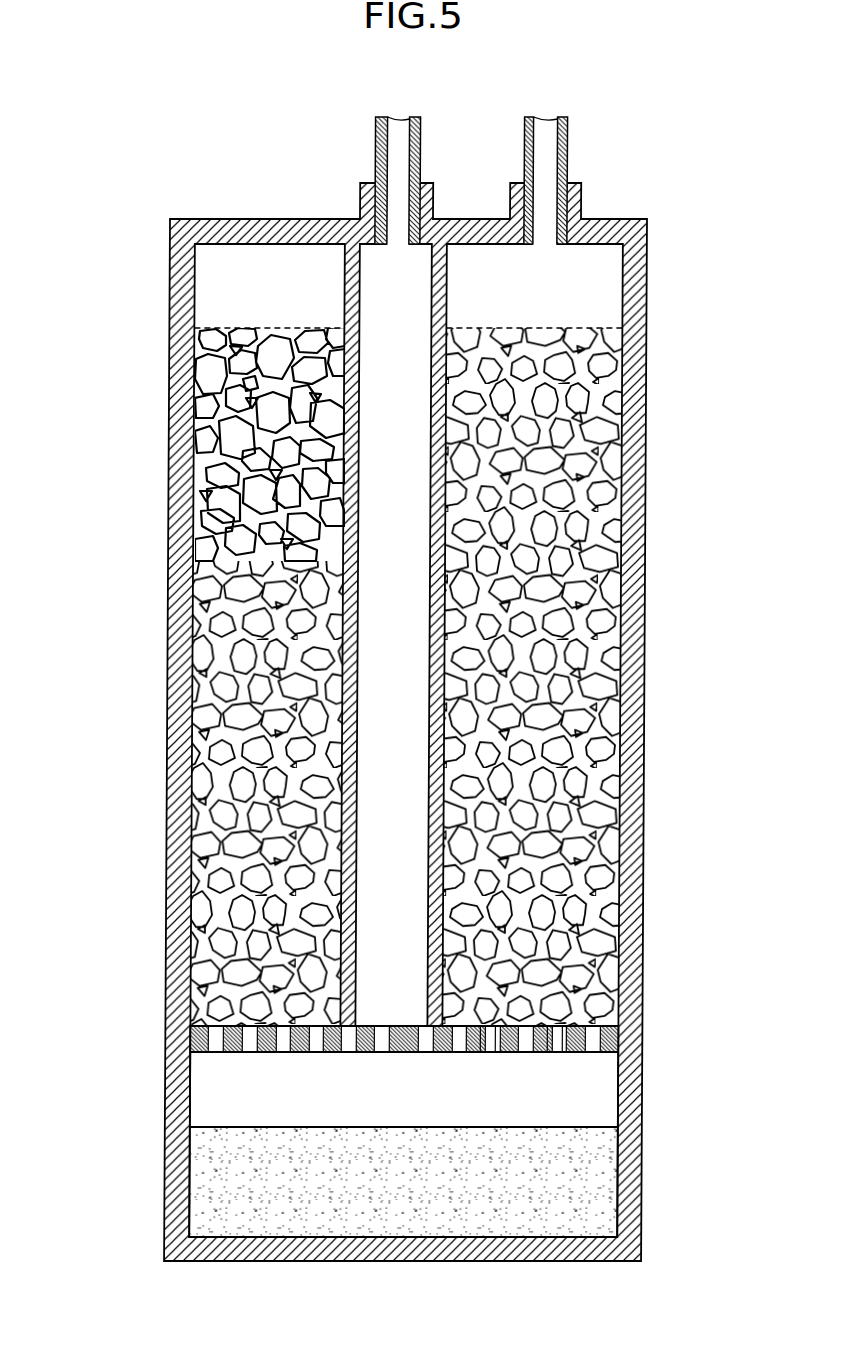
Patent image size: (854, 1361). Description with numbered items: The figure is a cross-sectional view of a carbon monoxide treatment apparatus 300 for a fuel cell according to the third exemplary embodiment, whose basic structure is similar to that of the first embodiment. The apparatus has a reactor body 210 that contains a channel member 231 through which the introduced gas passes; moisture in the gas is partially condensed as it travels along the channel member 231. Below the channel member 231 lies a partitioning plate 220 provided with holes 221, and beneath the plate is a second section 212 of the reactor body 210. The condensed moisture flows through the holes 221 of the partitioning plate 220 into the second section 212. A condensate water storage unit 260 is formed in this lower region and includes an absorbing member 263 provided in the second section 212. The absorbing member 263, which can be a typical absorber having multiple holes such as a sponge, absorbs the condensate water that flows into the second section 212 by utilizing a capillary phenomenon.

The carbon monoxide treatment apparatus 300 is at (417, 92).
The reactor body 210 is at (155, 772).
The second section 212 is at (600, 1092).
The partitioning plate 220 is at (400, 1066).
The holes 221 is at (558, 1046).
The channel member 231 is at (205, 645).
The condensate water storage unit 260 is at (218, 1107).
The absorbing member 263 is at (205, 1188).